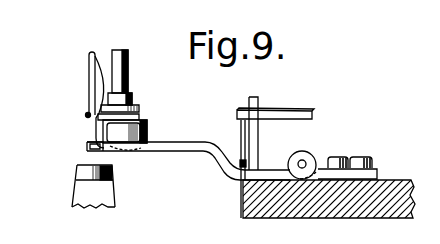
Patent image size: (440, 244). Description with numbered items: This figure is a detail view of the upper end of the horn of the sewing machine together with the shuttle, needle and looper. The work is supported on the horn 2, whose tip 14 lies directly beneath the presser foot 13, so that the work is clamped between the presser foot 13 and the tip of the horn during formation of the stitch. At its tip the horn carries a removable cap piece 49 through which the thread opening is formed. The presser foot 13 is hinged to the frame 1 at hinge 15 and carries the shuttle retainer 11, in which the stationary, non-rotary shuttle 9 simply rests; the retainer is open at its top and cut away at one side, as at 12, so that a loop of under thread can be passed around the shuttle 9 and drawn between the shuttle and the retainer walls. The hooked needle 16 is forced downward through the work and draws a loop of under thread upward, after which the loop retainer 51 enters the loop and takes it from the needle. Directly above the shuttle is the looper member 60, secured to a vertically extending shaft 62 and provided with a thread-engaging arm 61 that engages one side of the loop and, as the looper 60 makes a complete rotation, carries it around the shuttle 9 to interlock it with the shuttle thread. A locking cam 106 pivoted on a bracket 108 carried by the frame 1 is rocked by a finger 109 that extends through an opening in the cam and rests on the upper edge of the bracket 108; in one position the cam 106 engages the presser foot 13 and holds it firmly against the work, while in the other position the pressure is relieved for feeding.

The frame 1 is at (384, 187).
The horn 2 is at (78, 202).
The shuttle 9 is at (141, 116).
The shuttle retainer 11 is at (148, 130).
The cut-away side of shuttle retainer 12 is at (107, 147).
The presser foot 13 is at (140, 153).
The tip of the horn 14 is at (77, 177).
The hinge of presser foot 15 is at (312, 155).
The hooked needle 16 is at (89, 80).
The removable cap piece 49 is at (77, 167).
The loop retainer 51 is at (86, 115).
The looper member 60 is at (133, 110).
The thread-engaging arm 61 is at (92, 73).
The vertically-extending shaft 62 is at (125, 50).
The locking cam 106 is at (258, 132).
The bracket 108 is at (241, 130).
The finger 109 is at (283, 112).